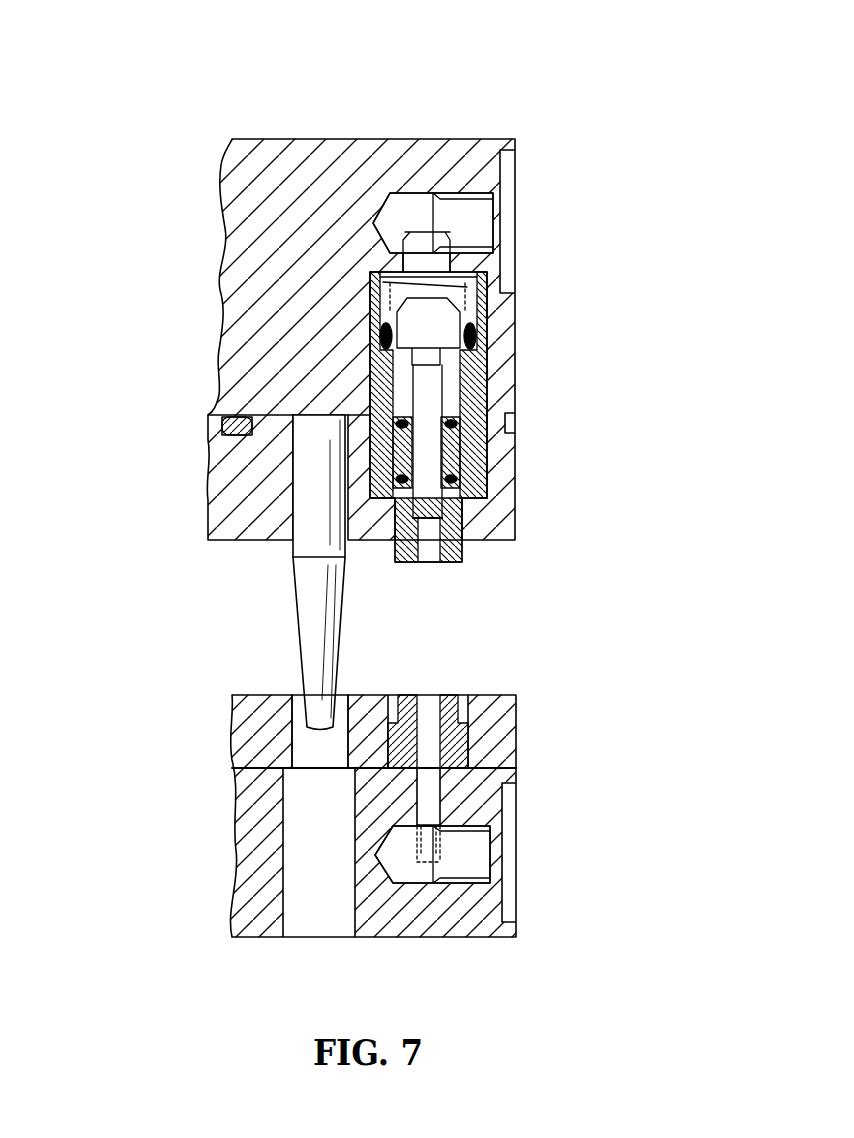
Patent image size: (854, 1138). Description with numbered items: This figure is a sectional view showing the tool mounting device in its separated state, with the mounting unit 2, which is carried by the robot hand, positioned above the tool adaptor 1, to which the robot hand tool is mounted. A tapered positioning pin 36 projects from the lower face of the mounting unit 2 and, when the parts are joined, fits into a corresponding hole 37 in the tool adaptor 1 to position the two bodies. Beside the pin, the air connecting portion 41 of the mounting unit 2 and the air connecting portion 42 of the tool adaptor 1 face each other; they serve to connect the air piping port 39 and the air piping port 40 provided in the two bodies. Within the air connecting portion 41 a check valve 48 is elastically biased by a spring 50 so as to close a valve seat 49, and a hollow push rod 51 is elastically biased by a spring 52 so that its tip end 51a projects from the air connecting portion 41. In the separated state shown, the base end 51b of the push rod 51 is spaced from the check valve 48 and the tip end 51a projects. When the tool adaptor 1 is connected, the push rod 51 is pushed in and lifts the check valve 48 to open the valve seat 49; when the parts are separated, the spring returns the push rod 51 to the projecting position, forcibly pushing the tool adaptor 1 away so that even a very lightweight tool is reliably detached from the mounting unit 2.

The tool adaptor 1 is at (170, 892).
The mounting unit 2 is at (257, 106).
The tapered positioning pin 36 is at (312, 615).
The hole 37 is at (303, 747).
The air piping port 39 is at (483, 207).
The air piping port 40 is at (487, 845).
The air connecting portion 41 is at (540, 400).
The air connecting portion 42 is at (550, 722).
The check valve 48 is at (450, 330).
The valve seat 49 is at (442, 360).
The spring 50 is at (487, 287).
The hollow push rod 51 is at (456, 465).
The tip end 51a is at (437, 555).
The base end 51b is at (375, 360).
The spring 52 is at (478, 493).